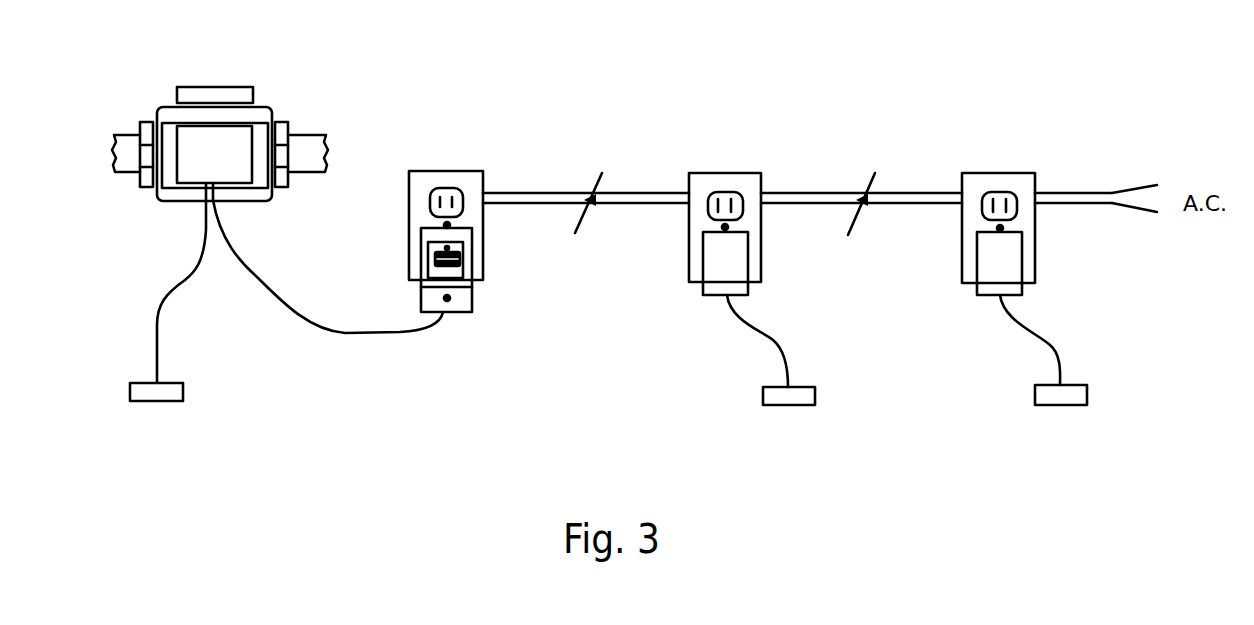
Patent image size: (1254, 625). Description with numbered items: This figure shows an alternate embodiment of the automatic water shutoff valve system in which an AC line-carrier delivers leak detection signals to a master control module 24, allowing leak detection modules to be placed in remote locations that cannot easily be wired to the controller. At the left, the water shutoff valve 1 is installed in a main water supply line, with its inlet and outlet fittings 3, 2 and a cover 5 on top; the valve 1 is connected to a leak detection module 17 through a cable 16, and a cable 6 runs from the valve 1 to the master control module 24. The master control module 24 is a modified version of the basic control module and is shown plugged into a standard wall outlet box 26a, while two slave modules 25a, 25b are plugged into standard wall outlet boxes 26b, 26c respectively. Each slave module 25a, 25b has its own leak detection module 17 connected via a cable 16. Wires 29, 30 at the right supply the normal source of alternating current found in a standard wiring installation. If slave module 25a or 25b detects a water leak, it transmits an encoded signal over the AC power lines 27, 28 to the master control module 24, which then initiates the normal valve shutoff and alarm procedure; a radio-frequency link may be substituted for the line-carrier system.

The water shutoff valve 1 is at (209, 157).
The output connector 2 is at (284, 179).
The input connector 3 is at (138, 180).
The top cover 5 is at (199, 87).
The cable 6 is at (260, 284).
The cable 16 is at (180, 287).
The leak detection module 17 is at (185, 396).
The master control module 24 is at (468, 297).
The slave module 25a is at (740, 278).
The slave module 25b is at (1015, 278).
The wall outlet box 26a is at (470, 178).
The wall outlet box 26b is at (753, 180).
The wall outlet box 26c is at (1028, 180).
The AC power line 27 is at (627, 192).
The AC power line 28 is at (889, 193).
The wire 29 is at (1137, 188).
The wire 30 is at (1138, 217).